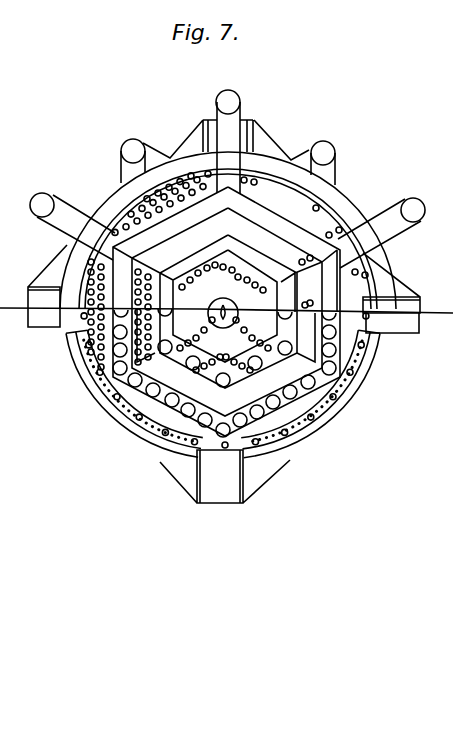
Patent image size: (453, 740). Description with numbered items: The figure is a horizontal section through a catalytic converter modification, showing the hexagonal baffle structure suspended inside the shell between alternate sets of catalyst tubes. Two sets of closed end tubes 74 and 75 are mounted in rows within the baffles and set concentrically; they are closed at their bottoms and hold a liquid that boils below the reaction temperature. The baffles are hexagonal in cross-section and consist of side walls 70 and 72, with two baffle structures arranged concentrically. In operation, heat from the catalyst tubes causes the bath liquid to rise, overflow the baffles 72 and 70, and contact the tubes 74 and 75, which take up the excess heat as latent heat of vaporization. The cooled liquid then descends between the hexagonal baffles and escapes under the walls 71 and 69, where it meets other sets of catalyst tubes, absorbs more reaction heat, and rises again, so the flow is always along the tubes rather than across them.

The wall 69 is at (326, 416).
The side wall 70 is at (308, 437).
The wall 71 is at (130, 405).
The side wall 72 is at (167, 353).
The closed end tubes 74 is at (112, 365).
The closed end tubes 75 is at (137, 372).